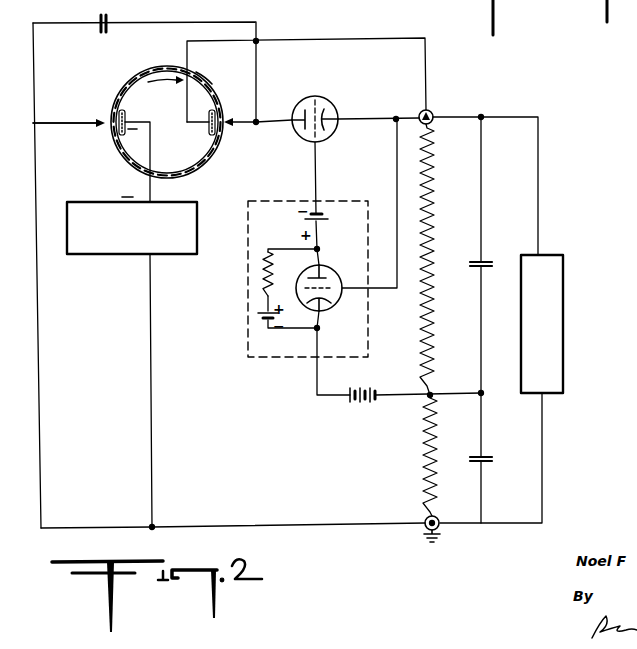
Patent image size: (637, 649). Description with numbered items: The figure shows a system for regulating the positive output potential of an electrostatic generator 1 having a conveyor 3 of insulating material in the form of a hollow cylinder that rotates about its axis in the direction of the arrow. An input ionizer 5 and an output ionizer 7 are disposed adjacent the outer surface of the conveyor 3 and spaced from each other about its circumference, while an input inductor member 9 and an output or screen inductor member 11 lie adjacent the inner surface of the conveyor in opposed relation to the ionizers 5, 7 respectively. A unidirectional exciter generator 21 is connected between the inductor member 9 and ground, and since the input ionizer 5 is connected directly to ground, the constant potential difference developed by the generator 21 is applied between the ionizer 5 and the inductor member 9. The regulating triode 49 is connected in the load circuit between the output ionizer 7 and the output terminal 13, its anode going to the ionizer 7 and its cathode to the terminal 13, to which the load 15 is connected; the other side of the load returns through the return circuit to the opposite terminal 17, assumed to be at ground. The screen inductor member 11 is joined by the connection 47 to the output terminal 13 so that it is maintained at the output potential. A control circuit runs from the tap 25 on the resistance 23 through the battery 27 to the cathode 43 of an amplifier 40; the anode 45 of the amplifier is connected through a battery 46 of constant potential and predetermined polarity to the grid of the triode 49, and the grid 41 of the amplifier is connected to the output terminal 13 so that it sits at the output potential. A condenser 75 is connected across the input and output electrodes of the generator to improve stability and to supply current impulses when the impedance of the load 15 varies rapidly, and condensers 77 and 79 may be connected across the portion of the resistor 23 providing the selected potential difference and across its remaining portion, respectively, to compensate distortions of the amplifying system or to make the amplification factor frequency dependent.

The electrostatic generator 1 is at (128, 76).
The conveyor 3 is at (216, 74).
The input ionizer 5 is at (104, 126).
The output ionizer 7 is at (228, 120).
The input inductor member 9 is at (130, 108).
The output inductor member 11 is at (212, 132).
The output terminal 13 is at (431, 110).
The load 15 is at (563, 303).
The terminal 17 is at (437, 516).
The unidirectional exciter generator 21 is at (96, 202).
The resistance 23 is at (424, 468).
The tap 25 is at (436, 390).
The battery 27 is at (363, 402).
The amplifier 40 is at (278, 200).
The grid 41 is at (340, 284).
The cathode 43 is at (326, 303).
The anode 45 is at (322, 272).
The battery 46 is at (320, 219).
The connection 47 is at (338, 40).
The triode 49 is at (332, 104).
The condenser 75 is at (106, 18).
The condenser 77 is at (484, 260).
The condenser 79 is at (486, 455).